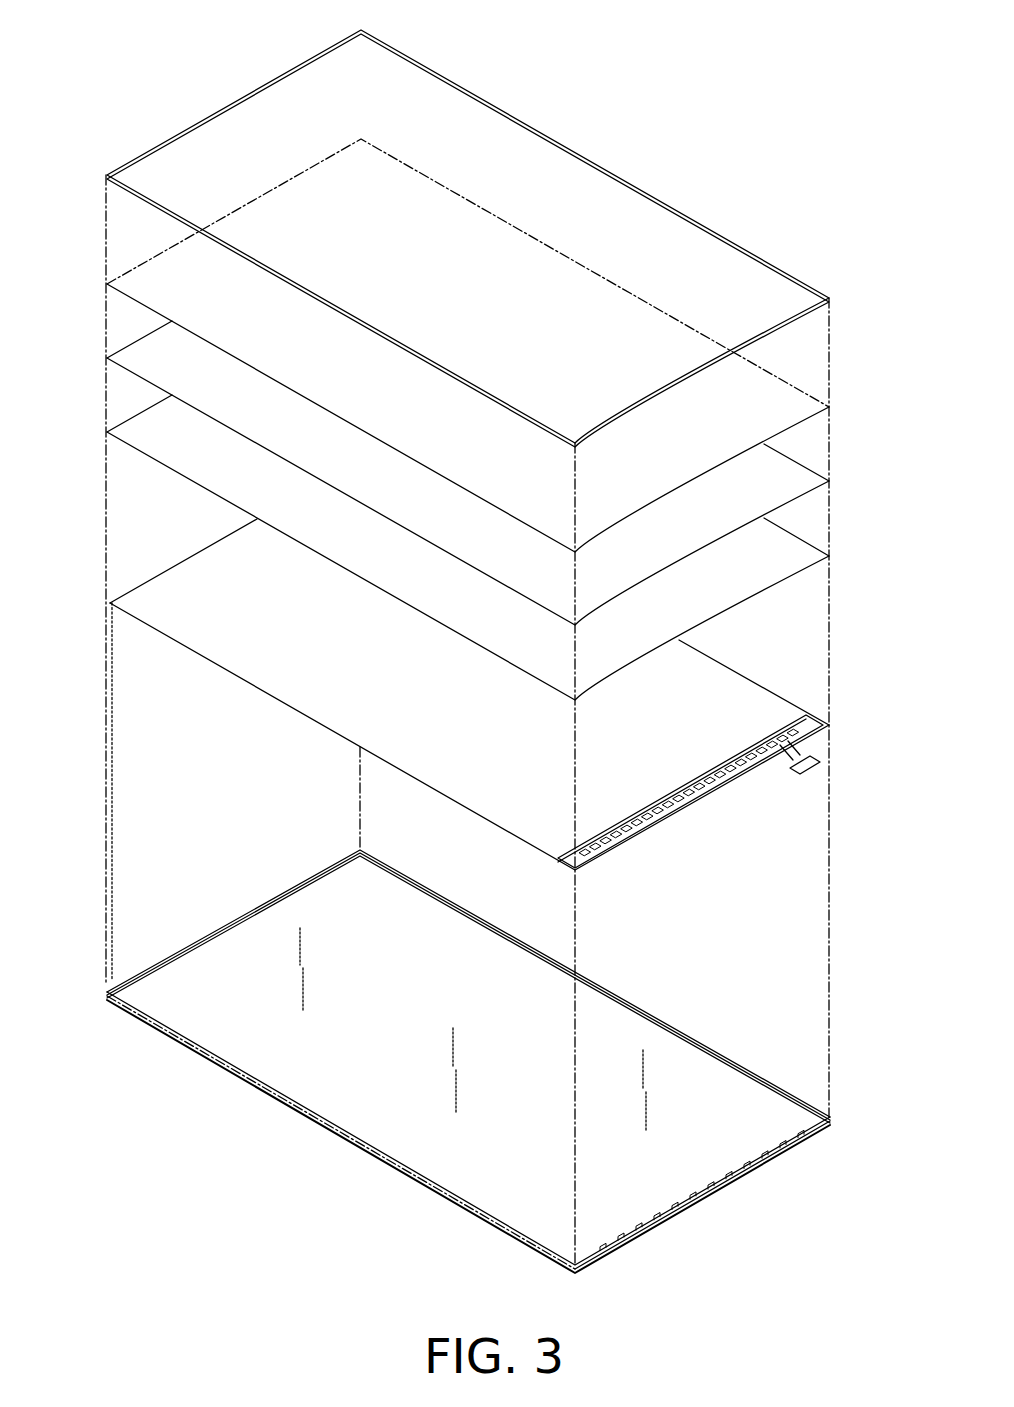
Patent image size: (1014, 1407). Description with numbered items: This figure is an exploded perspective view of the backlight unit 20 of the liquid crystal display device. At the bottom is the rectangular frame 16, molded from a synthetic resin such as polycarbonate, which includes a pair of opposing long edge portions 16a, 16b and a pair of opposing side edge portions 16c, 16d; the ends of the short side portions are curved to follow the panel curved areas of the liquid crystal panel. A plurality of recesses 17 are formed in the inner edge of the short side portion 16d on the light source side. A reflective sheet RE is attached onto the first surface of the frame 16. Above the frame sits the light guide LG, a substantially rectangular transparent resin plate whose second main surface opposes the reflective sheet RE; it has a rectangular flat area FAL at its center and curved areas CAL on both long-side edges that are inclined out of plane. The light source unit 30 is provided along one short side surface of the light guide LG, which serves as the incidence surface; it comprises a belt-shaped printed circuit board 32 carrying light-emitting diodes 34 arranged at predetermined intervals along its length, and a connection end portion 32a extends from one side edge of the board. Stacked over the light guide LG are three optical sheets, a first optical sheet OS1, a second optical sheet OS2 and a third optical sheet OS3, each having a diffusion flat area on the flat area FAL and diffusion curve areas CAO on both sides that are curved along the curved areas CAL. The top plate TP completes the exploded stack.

The backlight unit 20 is at (858, 614).
The top plate / transparent plate TP is at (437, 71).
The first optical sheet OS1 is at (160, 413).
The second optical sheet OS2 is at (164, 341).
The third optical sheet OS3 is at (455, 194).
The diffusion curve area CAO is at (600, 277).
The light guide LG is at (278, 625).
The curved area CAL is at (708, 668).
The flat area FAL is at (458, 706).
The light source unit 30 is at (636, 841).
The printed circuit board 32 is at (717, 768).
The connection end portion 32a is at (821, 766).
The light-emitting diode 34 is at (651, 819).
The frame 16 is at (233, 1073).
The long edge portion 16a is at (362, 1118).
The long edge portion 16b is at (609, 1008).
The side edge portion 16c is at (222, 925).
The side edge portion 16d is at (668, 1221).
The recess 17 is at (720, 1169).
The reflective sheet RE is at (483, 1177).